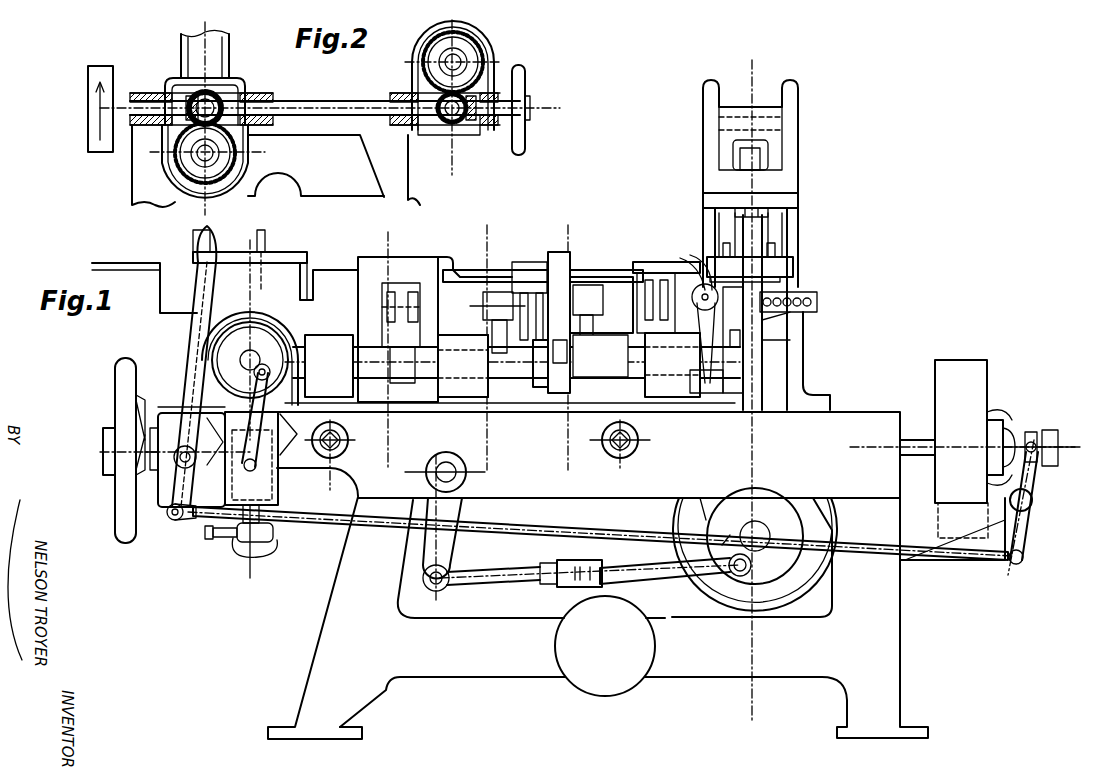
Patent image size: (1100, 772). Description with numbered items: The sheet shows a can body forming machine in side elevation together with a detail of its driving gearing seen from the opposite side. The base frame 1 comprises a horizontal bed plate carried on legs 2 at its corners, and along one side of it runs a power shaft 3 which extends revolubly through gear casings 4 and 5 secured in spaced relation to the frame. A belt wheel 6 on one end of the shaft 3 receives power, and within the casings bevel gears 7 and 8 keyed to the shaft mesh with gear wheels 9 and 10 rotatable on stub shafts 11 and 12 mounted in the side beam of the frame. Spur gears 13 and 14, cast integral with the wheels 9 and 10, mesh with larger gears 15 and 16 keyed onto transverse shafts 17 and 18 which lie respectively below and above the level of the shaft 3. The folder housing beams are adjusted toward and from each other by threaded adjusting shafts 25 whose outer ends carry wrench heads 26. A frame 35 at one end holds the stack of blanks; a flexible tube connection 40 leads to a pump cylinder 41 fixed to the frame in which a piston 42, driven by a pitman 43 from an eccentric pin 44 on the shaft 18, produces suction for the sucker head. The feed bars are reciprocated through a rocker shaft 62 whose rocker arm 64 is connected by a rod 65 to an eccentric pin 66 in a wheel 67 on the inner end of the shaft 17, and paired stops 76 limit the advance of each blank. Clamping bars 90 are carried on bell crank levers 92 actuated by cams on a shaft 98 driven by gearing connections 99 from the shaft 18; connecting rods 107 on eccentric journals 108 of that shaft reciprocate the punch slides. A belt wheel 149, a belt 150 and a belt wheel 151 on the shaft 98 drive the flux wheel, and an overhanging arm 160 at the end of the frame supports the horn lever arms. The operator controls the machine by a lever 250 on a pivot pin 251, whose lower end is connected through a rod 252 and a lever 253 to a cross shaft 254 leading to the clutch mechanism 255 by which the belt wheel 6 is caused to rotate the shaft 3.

In FIG. 1, the base frame 1 is at (555, 462).
In FIG. 1, the legs 2 is at (325, 622).
In FIG. 2, the power shaft 3 is at (303, 100).
In FIG. 1, the power shaft 3 is at (905, 440).
In FIG. 2, the gear casing 4 is at (168, 95).
In FIG. 1, the gear casing 5 is at (388, 257).
In FIG. 2, the belt wheel 6 is at (88, 66).
In FIG. 1, the belt wheel 6 is at (985, 368).
In FIG. 2, the bevel gear 7 is at (165, 123).
In FIG. 2, the bevel gear 8 is at (475, 130).
In FIG. 1, the bevel gear 8 is at (487, 262).
In FIG. 2, the bevel gear wheel 9 is at (220, 100).
In FIG. 1, the bevel gear wheel 9 is at (568, 262).
In FIG. 2, the bevel gear wheel 10 is at (447, 125).
In FIG. 2, the stub shaft 11 is at (245, 90).
In FIG. 1, the stub shaft 11 is at (766, 702).
In FIG. 2, the stub shaft 12 is at (425, 100).
In FIG. 2, the spur gear 13 is at (180, 75).
In FIG. 2, the spur gear 14 is at (458, 125).
In FIG. 2, the gear 15 is at (200, 165).
In FIG. 2, the gear 16 is at (470, 50).
In FIG. 2, the shaft 17 is at (195, 160).
In FIG. 1, the shaft 17 is at (770, 525).
In FIG. 2, the shaft 18 is at (470, 62).
In FIG. 1, the shaft 18 is at (243, 358).
In FIG. 1, the adjusting shaft 25 is at (635, 452).
In FIG. 1, the head 26 is at (345, 448).
In FIG. 1, the frame 35 is at (193, 238).
In FIG. 1, the flexible tube connection 40 is at (238, 555).
In FIG. 1, the pump cylinder 41 is at (222, 497).
In FIG. 1, the piston 42 is at (282, 495).
In FIG. 1, the pitman 43 is at (235, 407).
In FIG. 1, the eccentric pin 44 is at (245, 380).
In FIG. 1, the rocker shaft 62 is at (465, 465).
In FIG. 1, the rocker arm 64 is at (455, 548).
In FIG. 1, the rod 65 is at (545, 598).
In FIG. 1, the eccentric pin 66 is at (732, 575).
In FIG. 1, the wheel 67 is at (780, 566).
In FIG. 1, the stops 76 is at (545, 380).
In FIG. 1, the clamping bar 90 is at (635, 378).
In FIG. 1, the bell crank lever 92 is at (575, 260).
In FIG. 1, the shaft 98 is at (500, 375).
In FIG. 1, the gearing connections 99 is at (283, 325).
In FIG. 1, the connecting rod 107 is at (380, 325).
In FIG. 1, the eccentric journal 108 is at (395, 385).
In FIG. 1, the belt wheel 149 is at (672, 250).
In FIG. 1, the belt 150 is at (698, 338).
In FIG. 1, the belt wheel 151 is at (698, 372).
In FIG. 1, the overhanging arm 160 is at (798, 160).
In FIG. 1, the lever 250 is at (213, 299).
In FIG. 1, the pivot pin 251 is at (160, 478).
In FIG. 1, the rod 252 is at (330, 523).
In FIG. 1, the lever 253 is at (1030, 538).
In FIG. 1, the cross shaft 254 is at (1035, 504).
In FIG. 1, the clutch mechanism 255 is at (1032, 440).